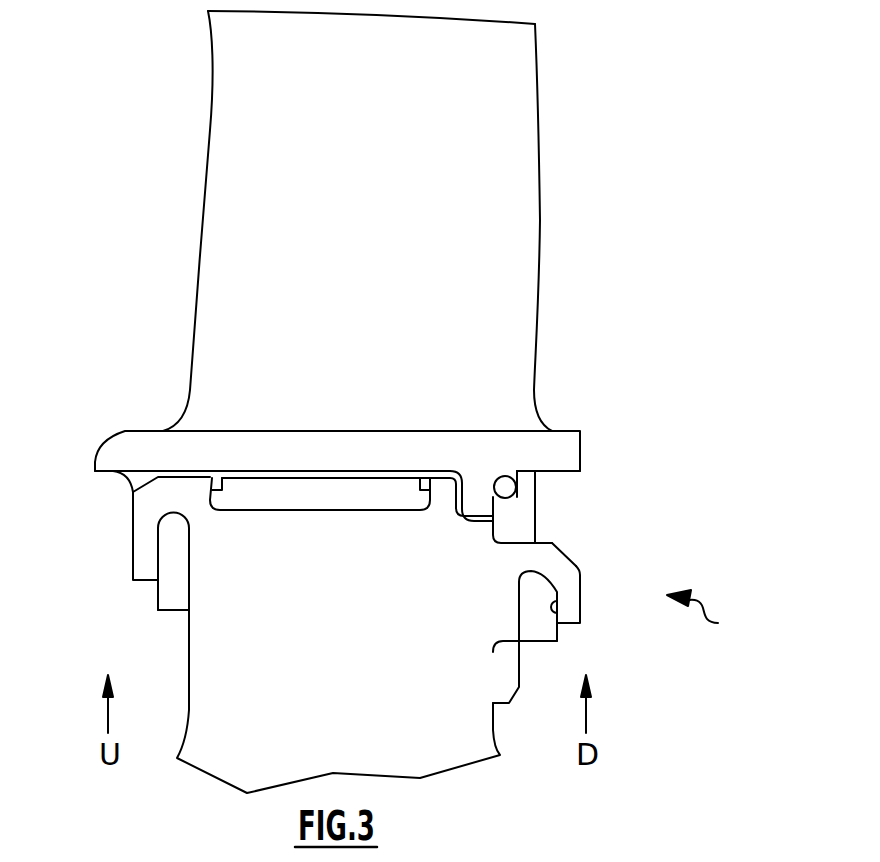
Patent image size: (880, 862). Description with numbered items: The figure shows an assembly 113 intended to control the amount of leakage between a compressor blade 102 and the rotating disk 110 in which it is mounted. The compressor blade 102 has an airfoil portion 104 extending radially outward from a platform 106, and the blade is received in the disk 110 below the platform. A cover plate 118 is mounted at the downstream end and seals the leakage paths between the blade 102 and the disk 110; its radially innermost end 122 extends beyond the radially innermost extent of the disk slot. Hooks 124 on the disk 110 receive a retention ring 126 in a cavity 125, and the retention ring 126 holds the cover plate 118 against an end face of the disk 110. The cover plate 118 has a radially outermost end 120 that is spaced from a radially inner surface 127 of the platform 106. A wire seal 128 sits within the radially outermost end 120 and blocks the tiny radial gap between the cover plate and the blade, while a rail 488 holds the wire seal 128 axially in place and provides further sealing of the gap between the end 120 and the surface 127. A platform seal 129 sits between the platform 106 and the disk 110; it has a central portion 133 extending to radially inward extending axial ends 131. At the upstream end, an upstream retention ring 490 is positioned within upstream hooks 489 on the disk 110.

The compressor blade 102 is at (517, 163).
The airfoil portion 104 is at (222, 173).
The platform 106 is at (123, 452).
The rotating disk 110 is at (351, 707).
The assembly 113 is at (713, 614).
The cover plate 118 is at (520, 512).
The radially outermost end 120 is at (530, 477).
The radially innermost end 122 is at (508, 672).
The hooks 124 is at (565, 572).
The cavity 125 is at (560, 613).
The retention ring 126 is at (537, 593).
The radially inner surface 127 is at (558, 472).
The wire seal 128 is at (505, 484).
The platform seal 129 is at (422, 472).
The axial ends 131 is at (222, 477).
The central portion 133 is at (322, 477).
The rail 488 is at (473, 485).
The upstream hooks 489 is at (143, 529).
The upstream retention ring 490 is at (175, 563).